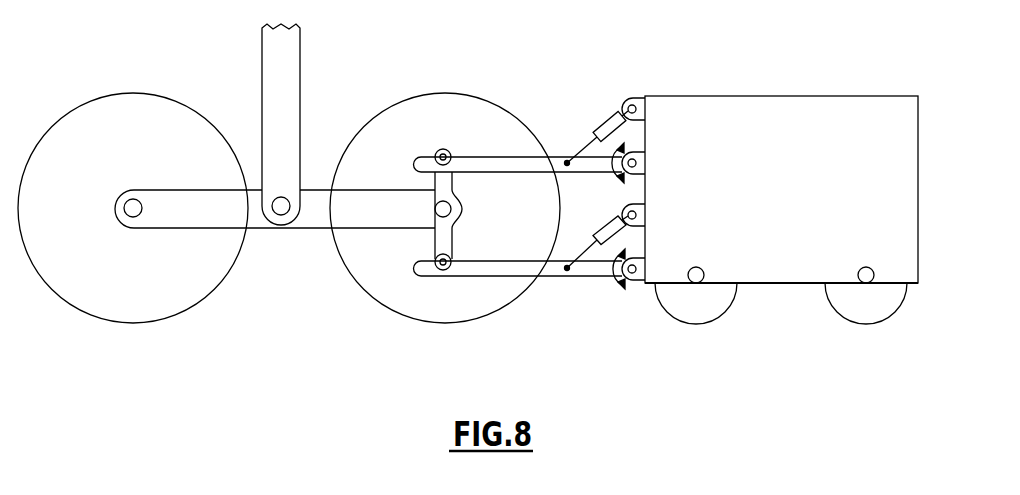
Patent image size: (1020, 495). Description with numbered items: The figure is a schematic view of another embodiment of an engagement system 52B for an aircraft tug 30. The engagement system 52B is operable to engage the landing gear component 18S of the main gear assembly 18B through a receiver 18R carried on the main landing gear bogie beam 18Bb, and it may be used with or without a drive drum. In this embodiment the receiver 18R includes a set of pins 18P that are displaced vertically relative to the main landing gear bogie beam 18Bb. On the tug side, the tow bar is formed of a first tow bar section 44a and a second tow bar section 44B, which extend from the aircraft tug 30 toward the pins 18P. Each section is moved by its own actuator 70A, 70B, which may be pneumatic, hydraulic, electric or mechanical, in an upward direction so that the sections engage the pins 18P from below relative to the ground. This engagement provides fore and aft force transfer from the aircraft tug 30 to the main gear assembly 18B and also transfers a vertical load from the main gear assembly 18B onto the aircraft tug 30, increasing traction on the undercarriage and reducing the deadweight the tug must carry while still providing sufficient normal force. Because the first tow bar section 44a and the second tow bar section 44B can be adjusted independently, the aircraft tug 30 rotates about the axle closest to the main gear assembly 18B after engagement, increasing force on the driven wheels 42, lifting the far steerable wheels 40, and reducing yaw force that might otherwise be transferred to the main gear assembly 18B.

The main gear assembly 18B is at (226, 78).
The main landing gear bogie beam 18Bb is at (350, 213).
The landing gear component 18S is at (294, 232).
The receiver 18R is at (463, 210).
The pins 18P is at (443, 149).
The first tow bar section 44a is at (530, 157).
The second tow bar section 44B is at (518, 271).
The engagement system 52B is at (422, 300).
The actuator 70A is at (607, 120).
The actuator 70B is at (626, 226).
The aircraft tug 30 is at (793, 200).
The driven wheels 42 is at (710, 311).
The steerable wheels 40 is at (873, 311).